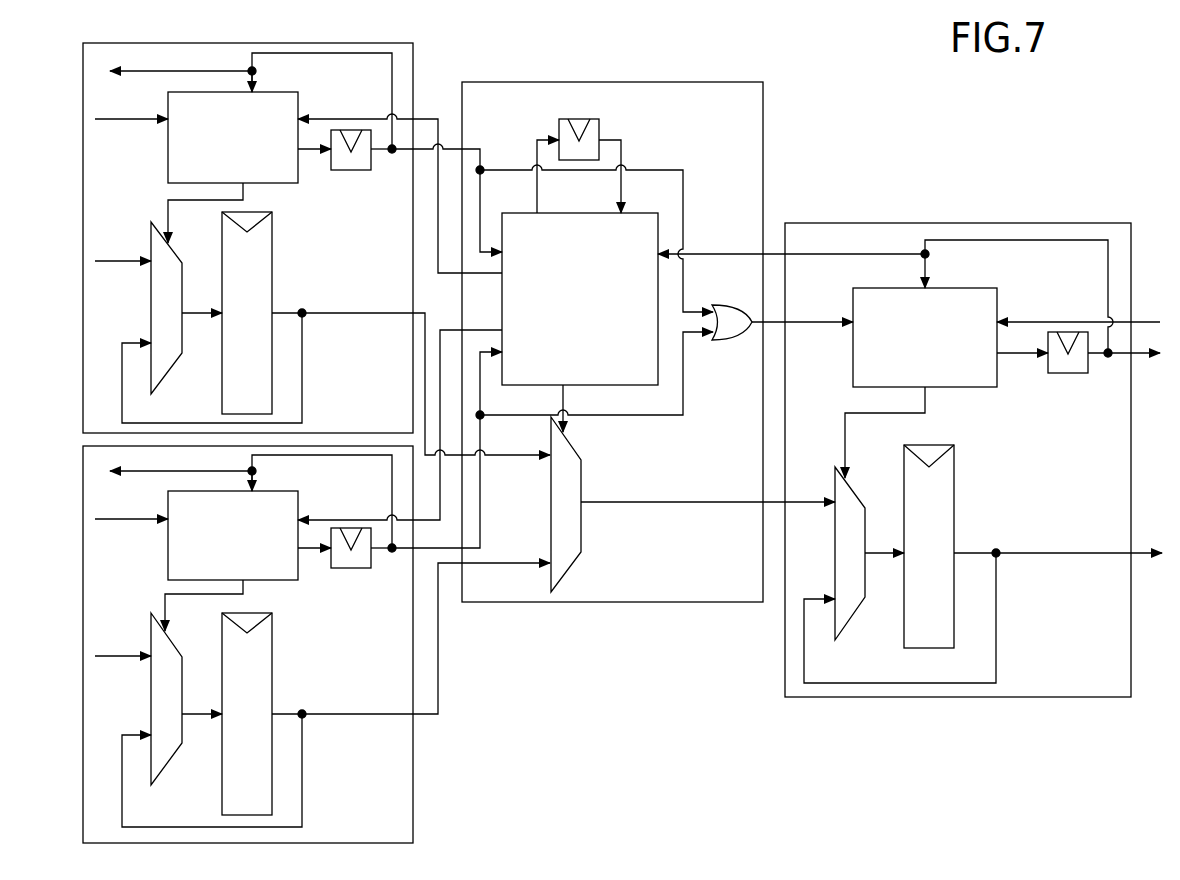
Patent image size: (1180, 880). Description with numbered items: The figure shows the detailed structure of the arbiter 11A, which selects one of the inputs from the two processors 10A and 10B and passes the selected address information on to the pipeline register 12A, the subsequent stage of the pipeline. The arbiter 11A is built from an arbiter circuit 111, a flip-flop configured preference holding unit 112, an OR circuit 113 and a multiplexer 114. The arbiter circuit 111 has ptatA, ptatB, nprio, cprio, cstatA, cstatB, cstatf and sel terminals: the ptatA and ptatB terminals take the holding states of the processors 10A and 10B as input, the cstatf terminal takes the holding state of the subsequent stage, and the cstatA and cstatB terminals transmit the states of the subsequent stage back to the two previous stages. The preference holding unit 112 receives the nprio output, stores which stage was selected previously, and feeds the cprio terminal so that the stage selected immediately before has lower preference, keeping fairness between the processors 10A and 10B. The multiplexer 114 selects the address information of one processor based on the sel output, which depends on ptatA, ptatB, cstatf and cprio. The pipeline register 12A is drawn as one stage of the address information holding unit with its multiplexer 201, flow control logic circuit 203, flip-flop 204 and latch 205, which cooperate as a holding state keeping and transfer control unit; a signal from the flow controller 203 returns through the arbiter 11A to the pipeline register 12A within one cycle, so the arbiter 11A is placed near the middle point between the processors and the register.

The processor 10A is at (413, 55).
The processor 10B is at (413, 785).
The arbiter 11A is at (693, 323).
The pipeline register 12A is at (973, 441).
The arbiter circuit 111 is at (556, 213).
The preference holding unit 112 is at (600, 124).
The OR circuit 113 is at (740, 340).
The multiplexer 114 is at (573, 440).
The multiplexer 201 is at (857, 498).
The logic circuit for flow control 203 is at (987, 387).
The flip-flop 204 is at (1068, 373).
The latch 205 is at (954, 470).